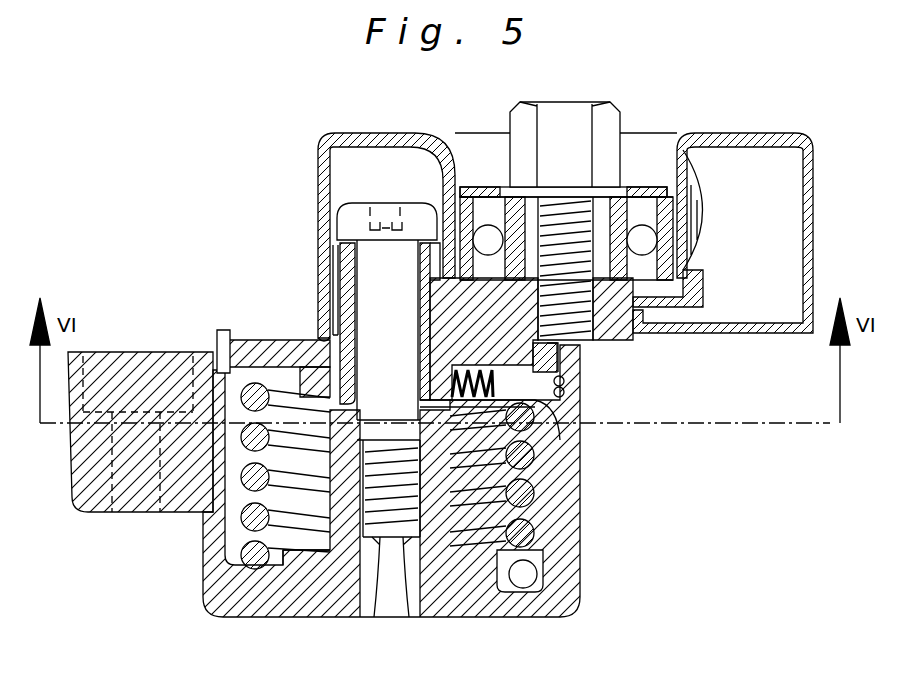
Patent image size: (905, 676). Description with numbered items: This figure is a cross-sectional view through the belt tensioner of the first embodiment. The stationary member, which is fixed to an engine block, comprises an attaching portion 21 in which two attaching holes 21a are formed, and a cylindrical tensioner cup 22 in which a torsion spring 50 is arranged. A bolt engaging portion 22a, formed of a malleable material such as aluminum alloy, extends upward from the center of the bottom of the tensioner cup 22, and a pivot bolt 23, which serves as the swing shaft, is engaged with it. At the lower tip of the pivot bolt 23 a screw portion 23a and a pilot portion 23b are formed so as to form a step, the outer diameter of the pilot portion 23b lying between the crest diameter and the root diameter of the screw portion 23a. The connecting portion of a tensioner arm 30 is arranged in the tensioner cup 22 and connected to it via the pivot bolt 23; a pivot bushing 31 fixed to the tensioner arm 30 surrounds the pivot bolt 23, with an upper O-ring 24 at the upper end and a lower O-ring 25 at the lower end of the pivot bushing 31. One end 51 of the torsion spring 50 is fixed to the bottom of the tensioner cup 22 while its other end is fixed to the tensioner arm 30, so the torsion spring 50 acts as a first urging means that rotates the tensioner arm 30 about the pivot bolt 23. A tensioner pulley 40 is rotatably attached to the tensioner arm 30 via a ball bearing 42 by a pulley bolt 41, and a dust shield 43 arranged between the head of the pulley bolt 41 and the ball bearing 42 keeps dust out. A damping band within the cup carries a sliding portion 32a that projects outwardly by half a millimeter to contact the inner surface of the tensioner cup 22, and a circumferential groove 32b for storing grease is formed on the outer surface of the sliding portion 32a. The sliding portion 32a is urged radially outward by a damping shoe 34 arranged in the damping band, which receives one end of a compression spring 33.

The attaching portion 21 is at (108, 514).
The attaching holes 21a is at (158, 514).
The tensioner cup 22 is at (218, 606).
The bolt engaging portion 22a is at (327, 467).
The pivot bolt 23 is at (368, 203).
The screw portion 23a is at (378, 505).
The pilot portion 23b is at (403, 535).
The upper O-ring 24 is at (320, 235).
The lower O-ring 25 is at (303, 392).
The tensioner arm 30 is at (261, 342).
The pivot bushing 31 is at (335, 268).
The sliding portion 32a is at (225, 338).
The groove 32b is at (575, 388).
The compression spring 33 is at (548, 445).
The damping shoe 34 is at (520, 427).
The tensioner pulley 40 is at (778, 325).
The pulley bolt 41 is at (512, 160).
The ball bearing 42 is at (686, 160).
The dust shield 43 is at (463, 188).
The torsion spring 50 is at (538, 493).
The one end of the torsion spring 51 is at (540, 563).